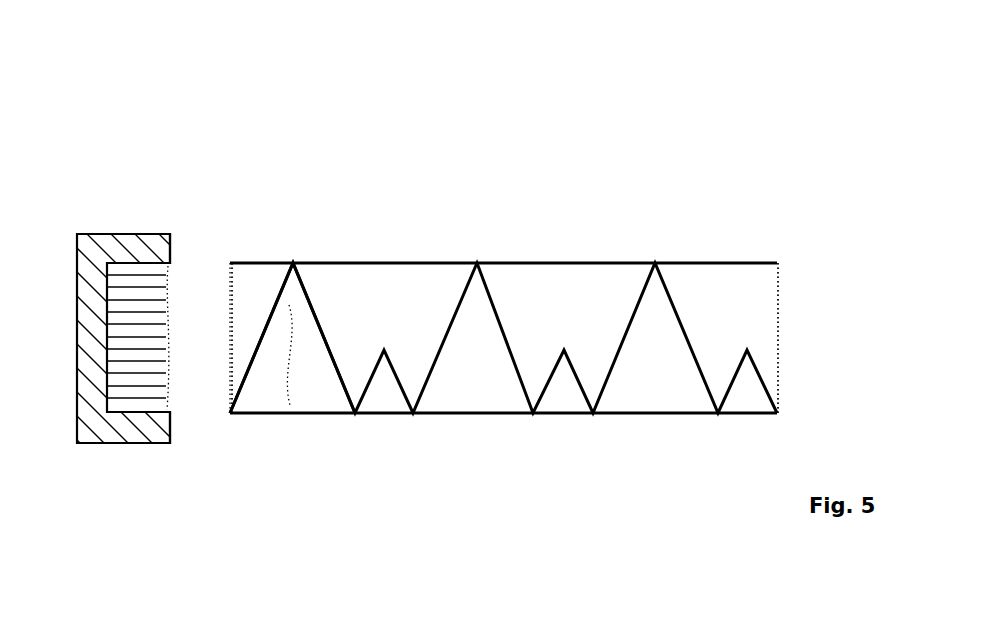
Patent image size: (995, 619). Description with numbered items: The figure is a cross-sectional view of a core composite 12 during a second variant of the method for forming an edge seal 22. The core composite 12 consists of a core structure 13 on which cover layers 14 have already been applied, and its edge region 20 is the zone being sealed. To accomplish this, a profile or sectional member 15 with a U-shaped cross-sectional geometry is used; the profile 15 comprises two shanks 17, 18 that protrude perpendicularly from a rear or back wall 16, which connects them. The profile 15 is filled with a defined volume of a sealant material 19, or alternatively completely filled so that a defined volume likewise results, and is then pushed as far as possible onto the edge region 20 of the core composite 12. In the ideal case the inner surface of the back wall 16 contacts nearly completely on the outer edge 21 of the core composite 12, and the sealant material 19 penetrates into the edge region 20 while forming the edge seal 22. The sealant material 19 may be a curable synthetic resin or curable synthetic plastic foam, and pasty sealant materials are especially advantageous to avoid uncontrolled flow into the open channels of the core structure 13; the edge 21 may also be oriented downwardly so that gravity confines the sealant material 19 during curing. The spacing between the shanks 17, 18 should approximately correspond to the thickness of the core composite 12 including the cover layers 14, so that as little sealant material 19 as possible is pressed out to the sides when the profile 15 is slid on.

The core composite 12 is at (552, 86).
The core structure 13 is at (514, 359).
The cover layers 14 is at (655, 262).
The profile member 15 is at (195, 183).
The back wall 16 is at (92, 367).
The shank 17 is at (128, 432).
The shank 18 is at (118, 244).
The sealant material 19 is at (156, 283).
The edge region 20 is at (302, 240).
The outer edge 21 is at (785, 298).
The edge seal 22 is at (210, 370).